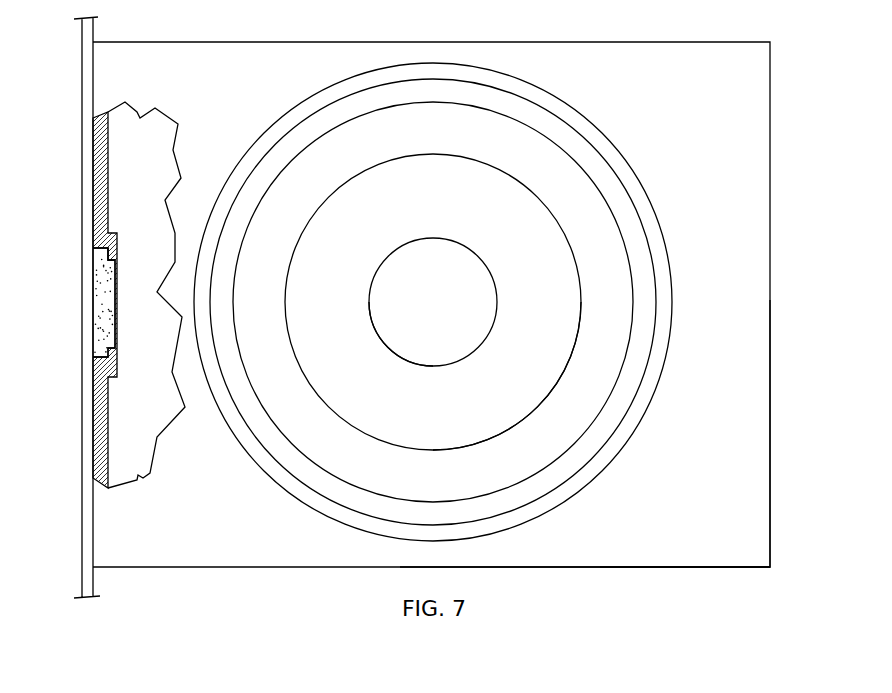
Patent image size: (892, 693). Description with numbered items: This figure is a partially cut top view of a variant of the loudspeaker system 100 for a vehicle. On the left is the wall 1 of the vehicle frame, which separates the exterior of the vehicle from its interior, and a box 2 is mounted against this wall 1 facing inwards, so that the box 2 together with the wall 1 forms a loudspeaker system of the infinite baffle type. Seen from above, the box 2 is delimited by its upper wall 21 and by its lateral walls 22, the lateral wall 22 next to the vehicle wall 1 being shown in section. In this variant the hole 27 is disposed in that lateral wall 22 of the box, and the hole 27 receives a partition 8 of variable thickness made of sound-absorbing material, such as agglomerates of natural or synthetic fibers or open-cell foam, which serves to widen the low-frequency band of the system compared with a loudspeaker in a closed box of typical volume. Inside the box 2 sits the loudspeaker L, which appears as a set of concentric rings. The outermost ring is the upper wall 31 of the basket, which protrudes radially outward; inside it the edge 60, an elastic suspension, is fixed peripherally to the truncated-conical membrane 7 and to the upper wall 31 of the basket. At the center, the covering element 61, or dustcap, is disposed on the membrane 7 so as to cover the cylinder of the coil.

The wall 1 is at (85, 553).
The box 2 is at (722, 567).
The upper wall 21 is at (637, 533).
The lateral wall 22 is at (103, 147).
The hole 27 is at (107, 260).
The partition 8 is at (103, 320).
The upper wall 31 is at (272, 447).
The edge 60 is at (318, 447).
The covering element 61 is at (482, 425).
The membrane 7 is at (410, 345).
The system 100 is at (772, 377).
The loudspeaker L is at (620, 226).